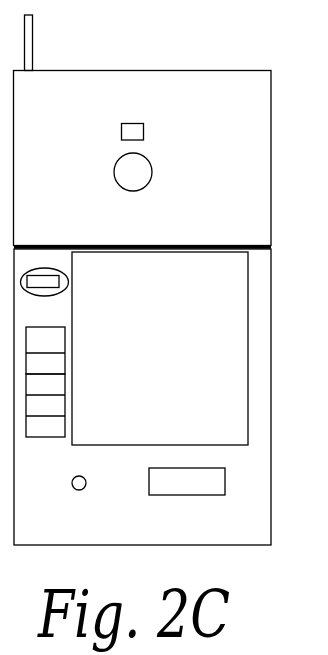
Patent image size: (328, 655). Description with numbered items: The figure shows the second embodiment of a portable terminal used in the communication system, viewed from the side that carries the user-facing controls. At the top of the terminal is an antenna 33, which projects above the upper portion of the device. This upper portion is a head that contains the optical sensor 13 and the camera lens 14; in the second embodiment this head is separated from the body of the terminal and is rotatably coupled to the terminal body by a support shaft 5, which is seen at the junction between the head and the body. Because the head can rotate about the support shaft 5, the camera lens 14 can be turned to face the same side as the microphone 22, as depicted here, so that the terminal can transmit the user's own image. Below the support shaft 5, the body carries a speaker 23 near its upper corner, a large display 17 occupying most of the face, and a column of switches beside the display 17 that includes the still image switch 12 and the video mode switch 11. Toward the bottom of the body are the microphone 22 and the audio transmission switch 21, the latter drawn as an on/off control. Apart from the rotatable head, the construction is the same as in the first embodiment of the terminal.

The support shaft 5 is at (160, 246).
The antenna 33 is at (33, 42).
The optical sensor 13 is at (138, 123).
The camera lens 14 is at (152, 163).
The speaker 23 is at (38, 267).
The display 17 is at (185, 358).
The still image switch 12 is at (65, 348).
The video mode switch 11 is at (65, 402).
The microphone 22 is at (85, 488).
The audio transmission switch 21 is at (178, 495).